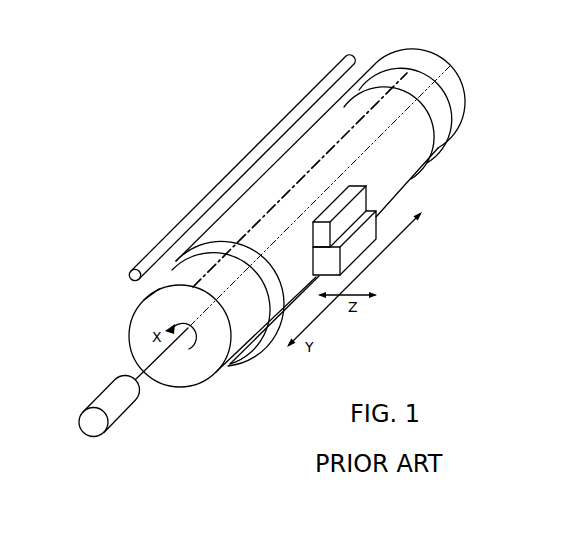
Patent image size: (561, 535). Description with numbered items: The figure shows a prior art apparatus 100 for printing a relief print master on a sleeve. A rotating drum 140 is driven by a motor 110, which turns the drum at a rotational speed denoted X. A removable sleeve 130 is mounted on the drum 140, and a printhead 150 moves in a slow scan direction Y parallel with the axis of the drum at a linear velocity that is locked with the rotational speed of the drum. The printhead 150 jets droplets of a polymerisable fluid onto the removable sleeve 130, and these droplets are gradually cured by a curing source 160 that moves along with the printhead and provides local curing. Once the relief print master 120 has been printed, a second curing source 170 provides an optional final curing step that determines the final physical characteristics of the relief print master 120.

The apparatus 100 is at (157, 157).
The motor 110 is at (115, 408).
The relief print master 120 is at (402, 153).
The removable sleeve 130 is at (427, 132).
The rotating drum 140 is at (452, 100).
The printhead 150 is at (352, 257).
The curing source 160 is at (353, 211).
The curing source 170 is at (350, 54).